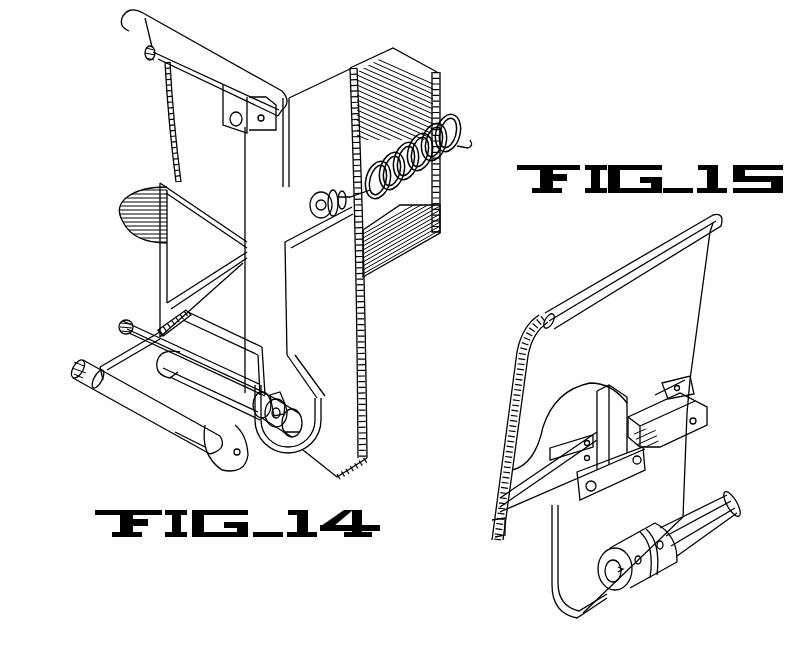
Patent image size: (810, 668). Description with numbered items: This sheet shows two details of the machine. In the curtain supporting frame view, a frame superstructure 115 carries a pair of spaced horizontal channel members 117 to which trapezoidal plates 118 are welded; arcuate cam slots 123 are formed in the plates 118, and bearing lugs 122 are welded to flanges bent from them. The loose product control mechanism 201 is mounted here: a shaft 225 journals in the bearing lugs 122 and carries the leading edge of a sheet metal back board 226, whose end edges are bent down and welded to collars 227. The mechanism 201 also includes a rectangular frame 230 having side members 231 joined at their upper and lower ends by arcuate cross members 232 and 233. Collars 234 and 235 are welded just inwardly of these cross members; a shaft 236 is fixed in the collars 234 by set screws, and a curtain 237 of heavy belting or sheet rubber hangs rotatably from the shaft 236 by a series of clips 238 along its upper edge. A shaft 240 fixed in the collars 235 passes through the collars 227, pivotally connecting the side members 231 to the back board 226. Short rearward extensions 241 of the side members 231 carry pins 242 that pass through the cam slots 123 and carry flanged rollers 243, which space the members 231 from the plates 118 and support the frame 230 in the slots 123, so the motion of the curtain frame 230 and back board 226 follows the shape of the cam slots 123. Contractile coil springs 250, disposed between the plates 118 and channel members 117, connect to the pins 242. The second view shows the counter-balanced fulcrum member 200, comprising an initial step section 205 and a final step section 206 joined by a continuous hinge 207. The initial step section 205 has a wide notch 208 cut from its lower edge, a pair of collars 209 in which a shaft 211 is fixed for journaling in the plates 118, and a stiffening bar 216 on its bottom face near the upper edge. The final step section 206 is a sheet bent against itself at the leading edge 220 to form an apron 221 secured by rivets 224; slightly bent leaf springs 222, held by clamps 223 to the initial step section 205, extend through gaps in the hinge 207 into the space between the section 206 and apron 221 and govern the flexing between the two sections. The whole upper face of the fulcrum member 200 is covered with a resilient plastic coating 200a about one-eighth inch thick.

In FIG. 14, the loose product control mechanism 201 is at (150, 163).
In FIG. 14, the arcuate cross member 232 is at (213, 55).
In FIG. 14, the shaft 236 is at (146, 50).
In FIG. 14, the curtain 237 is at (182, 118).
In FIG. 14, the clips 238 is at (229, 121).
In FIG. 14, the collars 234 is at (258, 129).
In FIG. 14, the contractile coil springs 250 is at (470, 128).
In FIG. 14, the pins 242 is at (311, 200).
In FIG. 14, the flanged rollers 243 is at (333, 212).
In FIG. 14, the rearward extensions 241 is at (297, 222).
In FIG. 14, the rectangular frame 230 is at (278, 289).
In FIG. 14, the side members 231 is at (272, 303).
In FIG. 14, the horizontal channel members 117 is at (440, 225).
In FIG. 14, the frame superstructure 115 is at (386, 292).
In FIG. 14, the trapezoidal plates 118 is at (352, 367).
In FIG. 14, the arcuate cam slots 123 is at (208, 270).
In FIG. 14, the shaft 240 is at (121, 325).
In FIG. 14, the sheet metal back board 226 is at (250, 356).
In FIG. 14, the arcuate cross member 233 is at (200, 375).
In FIG. 14, the shaft 225 is at (80, 370).
In FIG. 14, the collars 227 is at (280, 405).
In FIG. 14, the collars 235 is at (300, 413).
In FIG. 14, the bearing lugs 122 is at (220, 460).
In FIG. 15, the leading edge 220 is at (600, 289).
In FIG. 15, the apron 221 is at (685, 298).
In FIG. 15, the resilient plastic coating 200a is at (520, 357).
In FIG. 15, the fulcrum member 200 is at (492, 437).
In FIG. 15, the final step section 206 is at (516, 401).
In FIG. 15, the continuous hinge 207 is at (672, 383).
In FIG. 15, the rivets 224 is at (682, 396).
In FIG. 15, the stiffening bar 216 is at (690, 410).
In FIG. 15, the initial step section 205 is at (672, 462).
In FIG. 15, the leaf springs 222 is at (610, 410).
In FIG. 15, the clamps 223 is at (585, 500).
In FIG. 15, the wide notch 208 is at (557, 560).
In FIG. 15, the collars 209 is at (657, 575).
In FIG. 15, the shaft 211 is at (703, 520).